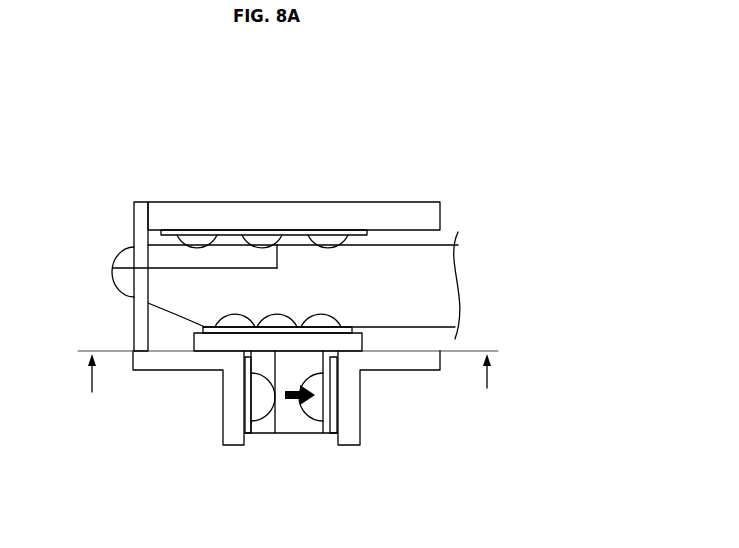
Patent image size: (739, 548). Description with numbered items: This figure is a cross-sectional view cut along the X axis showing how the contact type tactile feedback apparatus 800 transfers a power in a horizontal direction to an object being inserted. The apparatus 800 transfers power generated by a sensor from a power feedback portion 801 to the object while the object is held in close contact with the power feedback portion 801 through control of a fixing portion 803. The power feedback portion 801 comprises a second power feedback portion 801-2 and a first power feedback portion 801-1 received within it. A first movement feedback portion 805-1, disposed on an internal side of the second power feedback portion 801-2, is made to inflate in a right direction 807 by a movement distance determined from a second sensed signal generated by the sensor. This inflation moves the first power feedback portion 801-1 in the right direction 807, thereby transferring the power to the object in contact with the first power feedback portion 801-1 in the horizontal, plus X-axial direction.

The contact type tactile feedback apparatus 800 is at (267, 297).
The power feedback portion 801 is at (237, 430).
The first power feedback portion 801-1 is at (292, 423).
The second power feedback portion 801-2 is at (233, 428).
The fixing portion 803 is at (222, 210).
The first movement feedback portion 805-1 is at (265, 394).
The right direction 807 is at (302, 394).